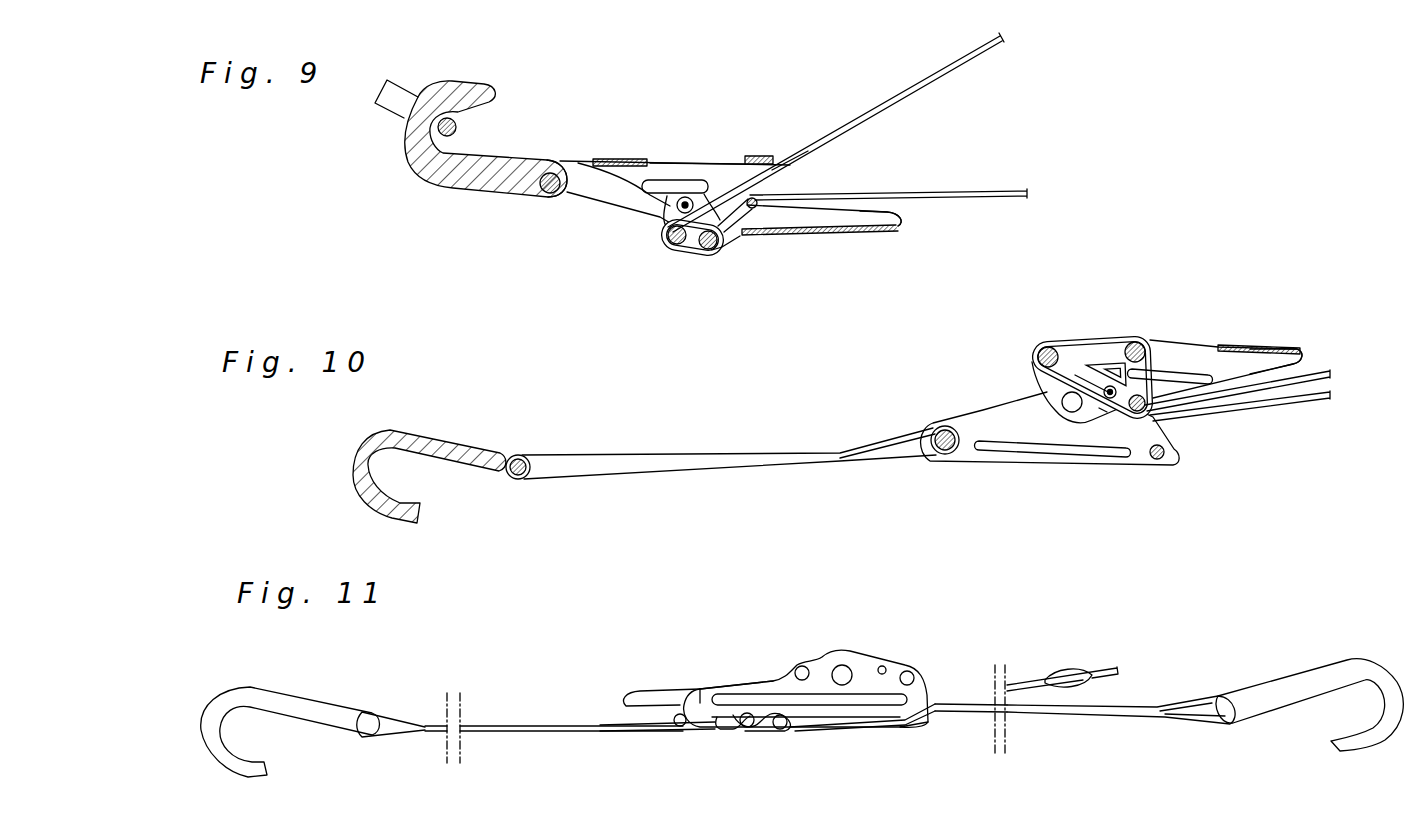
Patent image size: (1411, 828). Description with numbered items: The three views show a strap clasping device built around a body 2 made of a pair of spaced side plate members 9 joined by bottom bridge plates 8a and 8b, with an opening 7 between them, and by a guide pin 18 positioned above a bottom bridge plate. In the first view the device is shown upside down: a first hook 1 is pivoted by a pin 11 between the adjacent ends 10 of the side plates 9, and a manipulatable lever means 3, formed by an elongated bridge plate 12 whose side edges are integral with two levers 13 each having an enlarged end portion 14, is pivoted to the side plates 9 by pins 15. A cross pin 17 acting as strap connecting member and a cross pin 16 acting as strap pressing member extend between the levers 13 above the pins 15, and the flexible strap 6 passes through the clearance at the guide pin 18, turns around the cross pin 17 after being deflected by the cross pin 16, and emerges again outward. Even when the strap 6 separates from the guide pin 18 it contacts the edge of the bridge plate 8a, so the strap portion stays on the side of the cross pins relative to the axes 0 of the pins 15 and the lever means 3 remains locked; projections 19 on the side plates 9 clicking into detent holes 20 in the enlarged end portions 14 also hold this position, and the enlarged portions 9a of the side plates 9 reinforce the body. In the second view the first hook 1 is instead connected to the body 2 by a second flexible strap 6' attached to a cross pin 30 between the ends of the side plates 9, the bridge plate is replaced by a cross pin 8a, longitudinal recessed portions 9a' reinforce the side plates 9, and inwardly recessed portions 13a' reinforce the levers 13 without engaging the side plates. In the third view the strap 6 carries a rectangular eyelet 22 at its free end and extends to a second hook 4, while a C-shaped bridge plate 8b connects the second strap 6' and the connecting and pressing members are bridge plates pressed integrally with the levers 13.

In FIG. 9, the axes of the pins 0 is at (580, 162).
In FIG. 9, the first hook 1 is at (445, 188).
In FIG. 10, the first hook 1 is at (452, 447).
In FIG. 11, the first hook 1 is at (307, 705).
In FIG. 9, the body 2 is at (764, 156).
In FIG. 10, the body 2 is at (1052, 465).
In FIG. 11, the body 2 is at (851, 733).
In FIG. 9, the manipulatable lever means 3 is at (802, 240).
In FIG. 10, the manipulatable lever means 3 is at (1156, 334).
In FIG. 11, the manipulatable lever means 3 is at (685, 678).
In FIG. 11, the second hook 4 is at (1308, 680).
In FIG. 9, the flexible strap 6 is at (847, 136).
In FIG. 10, the flexible strap 6 is at (1189, 419).
In FIG. 11, the flexible strap 6 is at (917, 733).
In FIG. 10, the second flexible strap 6' is at (721, 480).
In FIG. 11, the second flexible strap 6' is at (520, 750).
In FIG. 9, the opening 7 is at (700, 163).
In FIG. 11, the opening 7 is at (887, 728).
In FIG. 9, the bottom bridge plate 8a is at (808, 150).
In FIG. 10, the bottom bridge plate 8a is at (1158, 460).
In FIG. 11, the bottom bridge plate 8a is at (926, 729).
In FIG. 9, the bottom bridge plate 8b is at (620, 159).
In FIG. 11, the bottom bridge plate 8b is at (677, 726).
In FIG. 9, the side plate members 9 is at (617, 201).
In FIG. 10, the side plate members 9 is at (1003, 427).
In FIG. 11, the side plate members 9 is at (857, 660).
In FIG. 11, the outwardly enlarged portions 9a is at (809, 751).
In FIG. 10, the outwardly recessed portions 9a' is at (1048, 488).
In FIG. 9, the adjacent ends 10 is at (575, 193).
In FIG. 9, the pin 11 is at (542, 194).
In FIG. 9, the elongated bridge plate 12 is at (843, 236).
In FIG. 10, the elongated bridge plate 12 is at (1277, 345).
In FIG. 9, the levers 13 is at (877, 222).
In FIG. 10, the levers 13 is at (1260, 362).
In FIG. 11, the levers 13 is at (650, 693).
In FIG. 10, the inwardly recessed portions 13a' is at (1226, 329).
In FIG. 11, the inwardly recessed portions 13a' is at (732, 646).
In FIG. 9, the enlarged end portion 14 is at (727, 234).
In FIG. 10, the enlarged end portion 14 is at (1097, 370).
In FIG. 9, the pins 15 is at (686, 198).
In FIG. 10, the pins 15 is at (1068, 400).
In FIG. 11, the pins 15 is at (840, 665).
In FIG. 9, the cross pin (strap pressing member) 16 is at (659, 247).
In FIG. 10, the cross pin (strap pressing member) 16 is at (1050, 348).
In FIG. 9, the cross pin (strap connecting member) 17 is at (705, 258).
In FIG. 10, the cross pin (strap connecting member) 17 is at (1134, 343).
In FIG. 9, the guide pin 18 is at (753, 209).
In FIG. 10, the guide pin 18 is at (1157, 417).
In FIG. 11, the guide pin 18 is at (913, 676).
In FIG. 10, the projections 19 is at (1103, 412).
In FIG. 11, the projections 19 is at (883, 667).
In FIG. 10, the detent holes 20 is at (1117, 388).
In FIG. 11, the detent holes 20 is at (802, 666).
In FIG. 11, the eyelet 22 is at (1108, 670).
In FIG. 10, the cross pin 30 is at (937, 460).